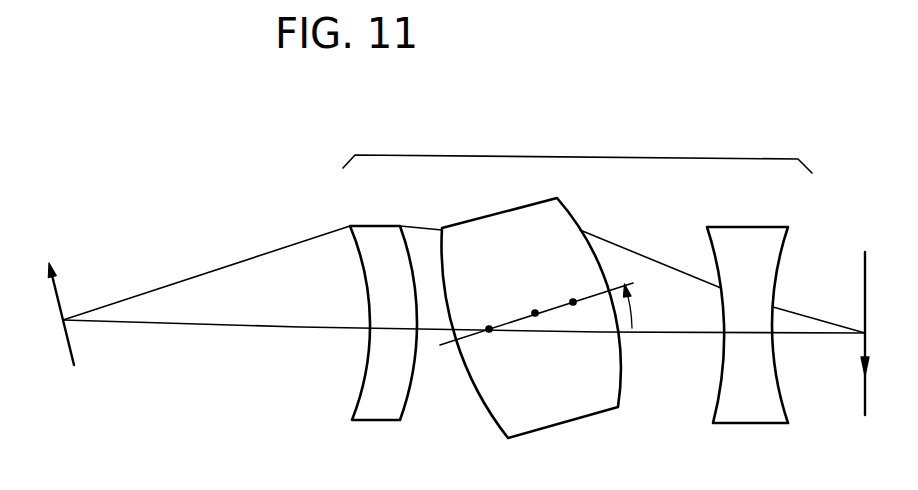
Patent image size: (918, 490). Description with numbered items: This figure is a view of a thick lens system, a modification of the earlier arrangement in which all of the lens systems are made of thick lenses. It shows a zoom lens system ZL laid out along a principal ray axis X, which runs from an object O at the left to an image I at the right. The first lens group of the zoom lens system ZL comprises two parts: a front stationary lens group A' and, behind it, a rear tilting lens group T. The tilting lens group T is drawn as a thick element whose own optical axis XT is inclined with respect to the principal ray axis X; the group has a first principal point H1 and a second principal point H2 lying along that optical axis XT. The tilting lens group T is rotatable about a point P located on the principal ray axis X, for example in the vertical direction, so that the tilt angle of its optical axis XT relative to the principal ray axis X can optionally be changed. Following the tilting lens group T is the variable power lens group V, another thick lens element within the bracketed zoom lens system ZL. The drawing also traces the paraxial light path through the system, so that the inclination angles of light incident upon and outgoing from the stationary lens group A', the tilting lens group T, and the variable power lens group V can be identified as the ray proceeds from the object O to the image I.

The object plane O is at (62, 306).
The image plane I is at (863, 340).
The principal ray axis X is at (257, 327).
The zoom lens system ZL is at (577, 149).
The front stationary lens group A' is at (384, 347).
The rear tilting lens group T is at (517, 423).
The variable power lens group V is at (735, 417).
The optical axis XT is at (583, 294).
The point P is at (486, 344).
The first principal point H1 is at (532, 311).
The second principal point H2 is at (571, 301).